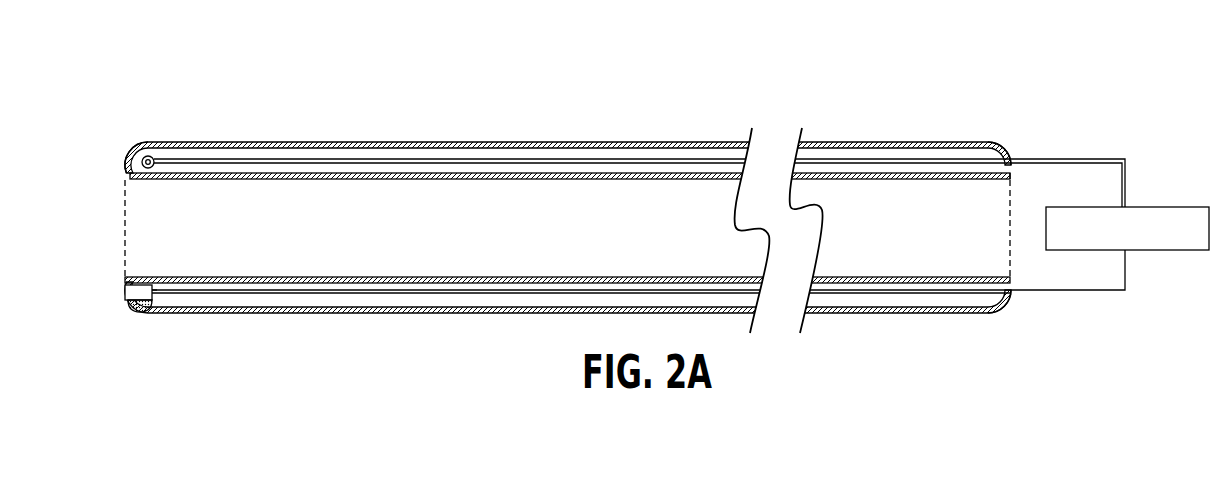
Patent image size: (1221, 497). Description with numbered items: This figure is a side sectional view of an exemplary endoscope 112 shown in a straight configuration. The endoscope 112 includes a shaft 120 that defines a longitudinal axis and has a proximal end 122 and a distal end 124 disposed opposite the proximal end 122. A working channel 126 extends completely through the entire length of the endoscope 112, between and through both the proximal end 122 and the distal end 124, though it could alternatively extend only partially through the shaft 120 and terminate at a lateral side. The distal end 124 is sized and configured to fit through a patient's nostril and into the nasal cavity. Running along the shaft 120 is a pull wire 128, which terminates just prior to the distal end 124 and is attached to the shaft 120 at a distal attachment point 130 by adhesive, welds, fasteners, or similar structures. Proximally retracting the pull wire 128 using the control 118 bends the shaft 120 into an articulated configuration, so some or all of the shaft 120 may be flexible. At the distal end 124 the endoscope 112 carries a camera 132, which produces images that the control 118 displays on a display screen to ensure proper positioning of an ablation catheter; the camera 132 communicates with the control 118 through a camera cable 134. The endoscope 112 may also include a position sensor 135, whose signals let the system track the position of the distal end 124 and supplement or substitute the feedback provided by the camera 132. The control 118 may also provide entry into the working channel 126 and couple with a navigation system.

The endoscope 112 is at (160, 72).
The control 118 is at (1172, 252).
The shaft 120 is at (448, 142).
The proximal end 122 is at (1010, 295).
The distal end 124 is at (124, 165).
The working channel 126 is at (615, 222).
The pull wire 128 is at (298, 158).
The distal attachment point 130 is at (148, 156).
The camera 132 is at (123, 291).
The camera cable 134 is at (297, 283).
The position sensor 135 is at (140, 308).